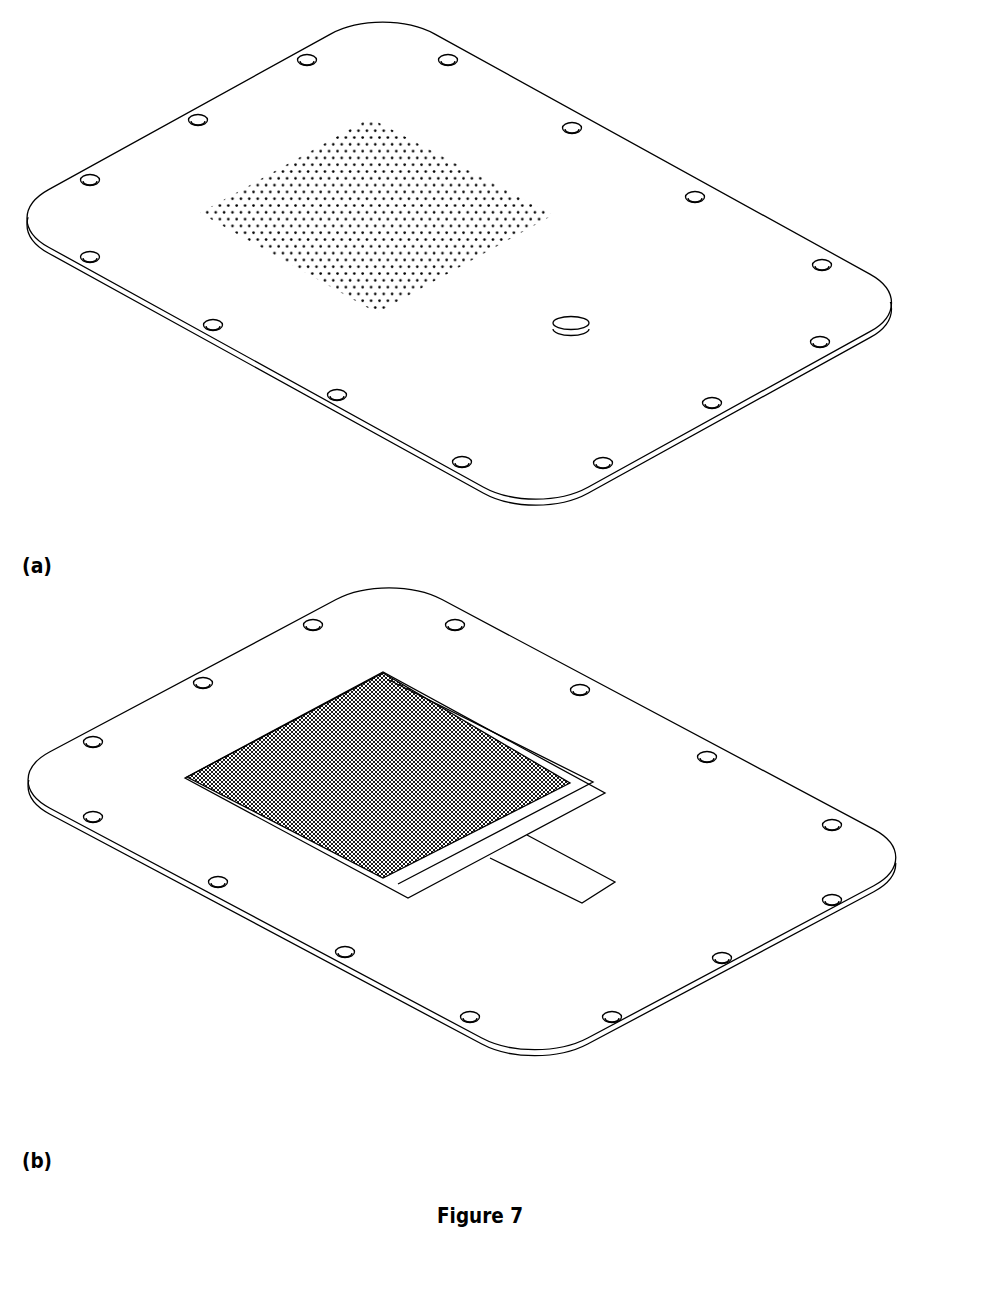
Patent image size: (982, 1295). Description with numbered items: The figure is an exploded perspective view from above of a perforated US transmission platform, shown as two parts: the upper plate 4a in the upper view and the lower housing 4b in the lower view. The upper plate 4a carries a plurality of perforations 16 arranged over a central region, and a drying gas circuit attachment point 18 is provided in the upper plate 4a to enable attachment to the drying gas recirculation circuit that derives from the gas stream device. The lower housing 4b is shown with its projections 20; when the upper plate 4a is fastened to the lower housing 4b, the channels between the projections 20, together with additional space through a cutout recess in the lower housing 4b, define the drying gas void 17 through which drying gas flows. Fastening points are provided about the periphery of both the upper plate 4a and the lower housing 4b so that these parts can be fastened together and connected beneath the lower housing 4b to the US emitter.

The upper plate 4a is at (461, 263).
The lower housing 4b is at (463, 821).
The perforations 16 is at (418, 175).
The drying gas void 17 is at (400, 787).
The drying gas circuit attachment point 18 is at (574, 321).
The projections 20 is at (435, 740).